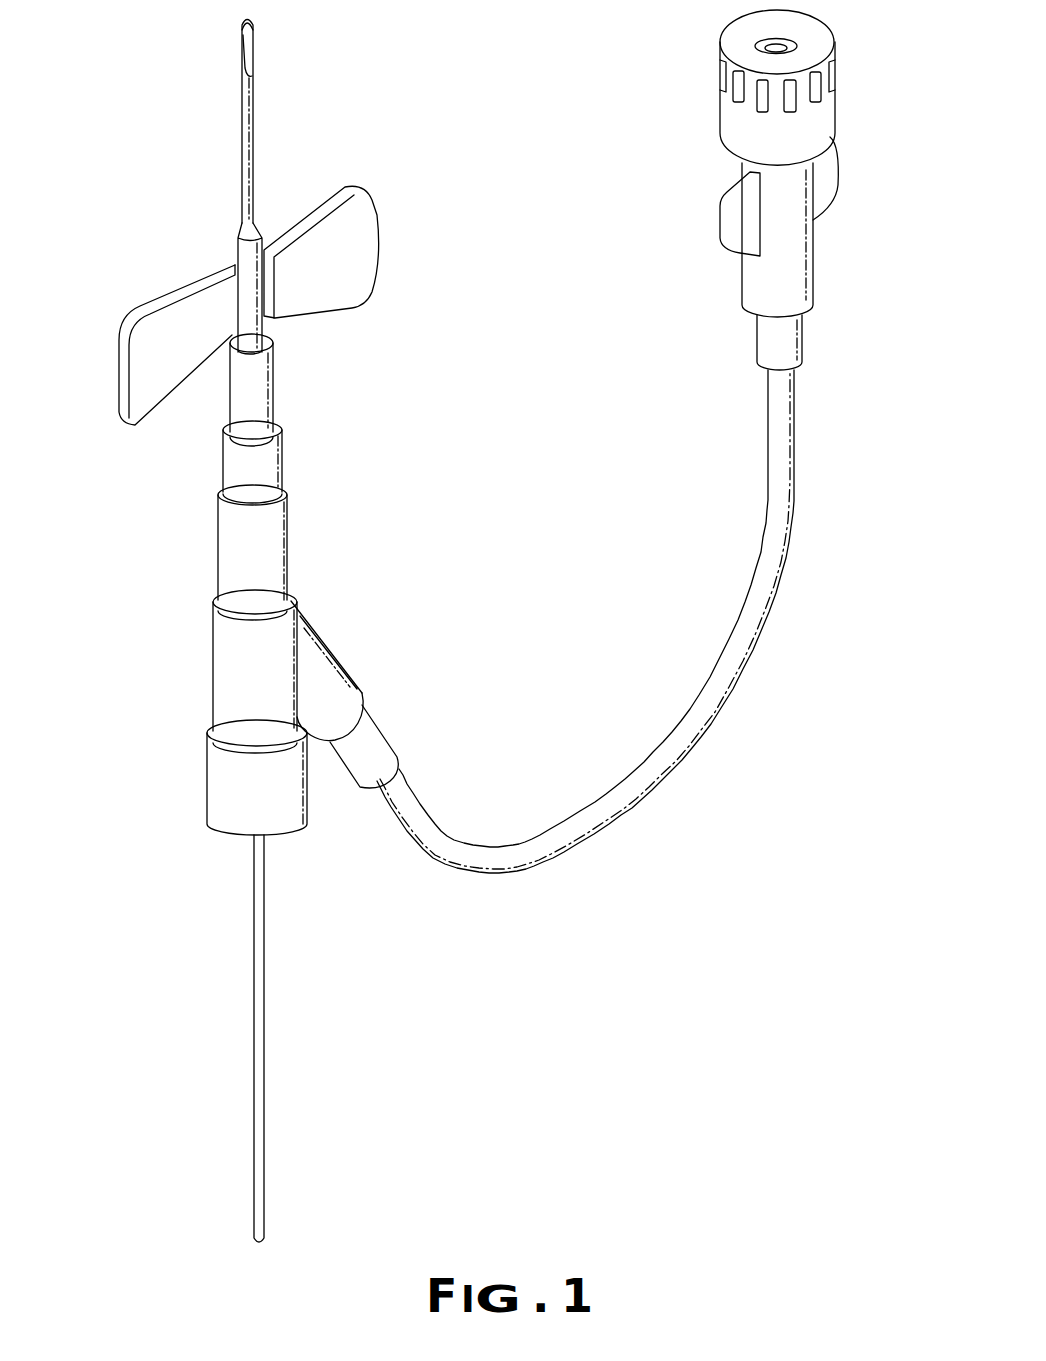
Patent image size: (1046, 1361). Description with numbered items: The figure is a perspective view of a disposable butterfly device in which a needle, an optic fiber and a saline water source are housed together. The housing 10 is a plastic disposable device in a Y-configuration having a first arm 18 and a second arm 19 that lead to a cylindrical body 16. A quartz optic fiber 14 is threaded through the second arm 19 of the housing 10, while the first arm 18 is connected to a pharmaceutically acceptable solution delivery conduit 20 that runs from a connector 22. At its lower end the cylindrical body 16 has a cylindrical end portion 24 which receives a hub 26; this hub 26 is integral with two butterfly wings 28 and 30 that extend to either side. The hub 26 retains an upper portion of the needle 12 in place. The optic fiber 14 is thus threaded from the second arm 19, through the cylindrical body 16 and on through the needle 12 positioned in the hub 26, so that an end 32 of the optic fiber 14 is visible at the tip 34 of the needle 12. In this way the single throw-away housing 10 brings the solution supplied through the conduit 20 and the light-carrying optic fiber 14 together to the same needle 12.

The housing 10 is at (340, 538).
The needle 12 is at (255, 155).
The optic fiber 14 is at (253, 917).
The cylindrical body 16 is at (218, 540).
The first arm 18 is at (330, 640).
The second arm 19 is at (207, 782).
The solution delivery conduit 20 is at (577, 852).
The connector 22 is at (722, 118).
The cylindrical end portion 24 is at (277, 384).
The hub 26 is at (238, 310).
The butterfly wing 28 is at (380, 238).
The butterfly wing 30 is at (117, 368).
The end of optic fiber 32 is at (257, 25).
The tip of needle 34 is at (240, 73).